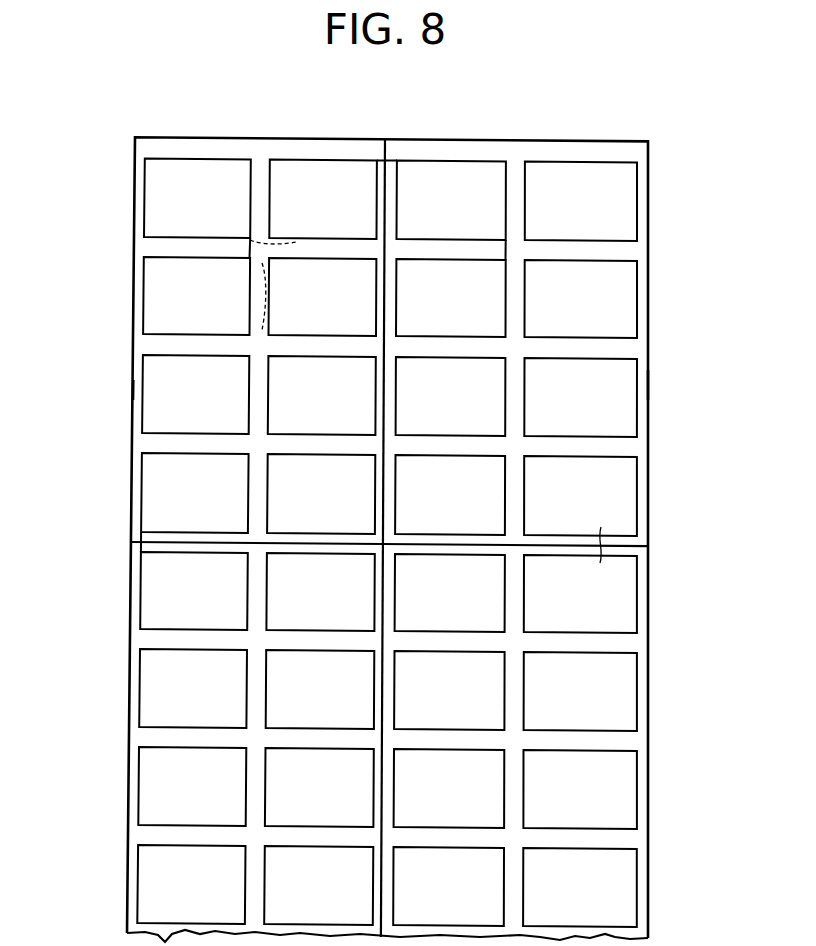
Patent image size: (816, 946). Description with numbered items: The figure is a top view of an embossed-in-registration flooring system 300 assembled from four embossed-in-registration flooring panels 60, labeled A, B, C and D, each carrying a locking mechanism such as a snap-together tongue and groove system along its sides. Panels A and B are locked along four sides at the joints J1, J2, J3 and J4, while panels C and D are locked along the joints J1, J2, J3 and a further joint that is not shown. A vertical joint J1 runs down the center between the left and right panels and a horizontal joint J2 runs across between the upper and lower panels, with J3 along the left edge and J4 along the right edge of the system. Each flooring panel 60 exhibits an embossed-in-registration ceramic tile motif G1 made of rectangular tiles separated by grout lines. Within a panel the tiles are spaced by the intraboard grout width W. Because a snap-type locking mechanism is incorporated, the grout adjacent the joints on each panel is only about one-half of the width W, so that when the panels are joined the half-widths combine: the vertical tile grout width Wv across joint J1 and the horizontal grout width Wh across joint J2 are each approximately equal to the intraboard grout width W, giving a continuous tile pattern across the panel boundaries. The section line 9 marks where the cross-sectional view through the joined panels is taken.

The embossed-in-registration flooring system 300 is at (180, 108).
The embossed-in-registration flooring panel 60 is at (133, 264).
The joint J1 is at (387, 150).
The joint J2 is at (613, 540).
The joint J3 is at (132, 400).
The joint J4 is at (648, 385).
The embossed-in-registration ceramic tile motif G1 is at (366, 322).
The intraboard grout width W is at (293, 117).
The horizontal grout width Wh is at (677, 575).
The vertical tile grout width Wv is at (375, 148).
The section line 9 is at (82, 696).